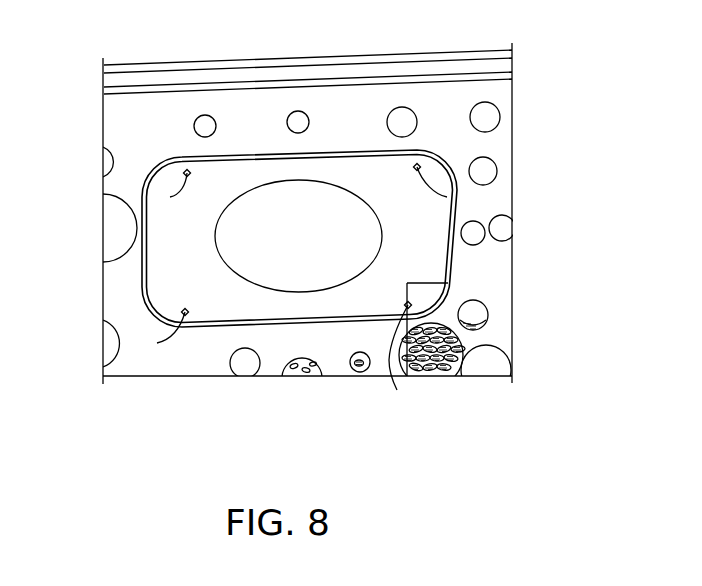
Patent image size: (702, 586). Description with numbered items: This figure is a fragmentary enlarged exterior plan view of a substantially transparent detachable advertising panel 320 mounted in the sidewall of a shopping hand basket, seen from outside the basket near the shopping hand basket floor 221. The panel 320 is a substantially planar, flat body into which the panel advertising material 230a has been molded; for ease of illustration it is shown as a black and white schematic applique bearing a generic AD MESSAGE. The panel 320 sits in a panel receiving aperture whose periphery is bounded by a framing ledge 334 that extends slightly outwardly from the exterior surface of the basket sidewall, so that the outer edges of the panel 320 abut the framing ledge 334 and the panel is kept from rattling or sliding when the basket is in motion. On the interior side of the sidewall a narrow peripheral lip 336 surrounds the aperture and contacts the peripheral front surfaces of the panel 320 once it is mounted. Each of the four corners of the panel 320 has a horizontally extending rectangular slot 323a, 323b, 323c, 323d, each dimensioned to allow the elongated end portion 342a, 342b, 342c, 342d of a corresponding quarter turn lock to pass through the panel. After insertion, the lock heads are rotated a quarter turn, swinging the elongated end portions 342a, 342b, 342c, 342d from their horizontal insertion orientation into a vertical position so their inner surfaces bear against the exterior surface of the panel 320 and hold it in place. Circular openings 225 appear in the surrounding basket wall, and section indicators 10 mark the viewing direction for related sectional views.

The section line / viewing direction 10 is at (448, 283).
The shopping hand basket floor 221 is at (458, 377).
The apertures / holes 225 is at (194, 122).
The panel advertising material 230a is at (335, 293).
The substantially transparent advertising panel 320 is at (200, 300).
The rectangular slot 323a is at (178, 192).
The rectangular slot 323b is at (182, 312).
The rectangular slot 323c is at (417, 167).
The rectangular slot 323d is at (381, 353).
The framing ledge 334 is at (450, 268).
The peripheral lip 336 is at (455, 220).
The elongated end portion 342a is at (187, 173).
The elongated end portion 342b is at (157, 343).
The elongated end portion 342c is at (447, 197).
The elongated end portion 342d is at (397, 390).